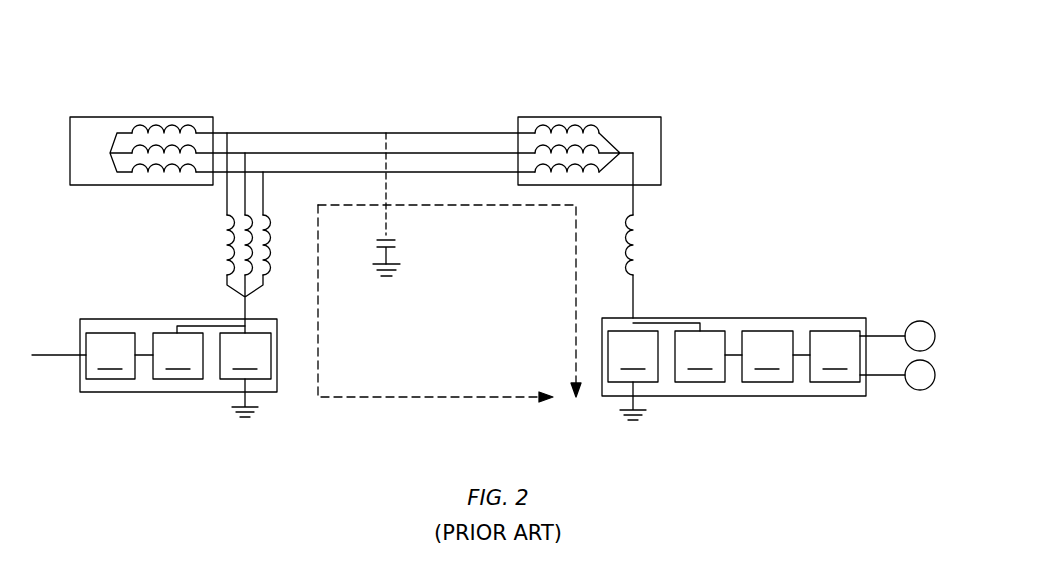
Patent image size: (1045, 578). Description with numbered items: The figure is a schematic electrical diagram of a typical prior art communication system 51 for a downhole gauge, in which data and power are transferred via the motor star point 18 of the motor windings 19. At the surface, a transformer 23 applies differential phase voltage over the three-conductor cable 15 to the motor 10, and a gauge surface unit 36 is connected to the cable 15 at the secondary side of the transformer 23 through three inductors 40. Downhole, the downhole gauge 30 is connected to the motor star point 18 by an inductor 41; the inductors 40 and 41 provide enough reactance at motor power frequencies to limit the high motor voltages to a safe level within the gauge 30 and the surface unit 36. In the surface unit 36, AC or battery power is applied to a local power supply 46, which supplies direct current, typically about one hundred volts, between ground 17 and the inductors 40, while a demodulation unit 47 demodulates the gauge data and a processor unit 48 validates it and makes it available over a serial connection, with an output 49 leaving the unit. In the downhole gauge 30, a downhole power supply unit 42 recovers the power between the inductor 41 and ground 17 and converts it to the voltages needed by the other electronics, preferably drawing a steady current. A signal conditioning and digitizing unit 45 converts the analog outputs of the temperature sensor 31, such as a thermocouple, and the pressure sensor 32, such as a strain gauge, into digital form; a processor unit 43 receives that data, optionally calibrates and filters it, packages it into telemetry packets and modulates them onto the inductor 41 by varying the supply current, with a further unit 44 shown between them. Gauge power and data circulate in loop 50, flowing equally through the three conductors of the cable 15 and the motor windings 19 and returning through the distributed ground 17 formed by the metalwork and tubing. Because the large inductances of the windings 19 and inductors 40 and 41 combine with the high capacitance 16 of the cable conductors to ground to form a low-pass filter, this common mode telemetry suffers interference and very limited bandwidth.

The communication system 51 is at (700, 93).
The transformer 23 is at (143, 117).
The cable 15 is at (353, 133).
The motor 10 is at (610, 112).
The motor windings 19 is at (586, 128).
The motor star point 18 is at (620, 143).
The inductors 40 is at (227, 255).
The capacitance 16 is at (388, 245).
The ground 17 is at (388, 272).
The loop 50 is at (415, 397).
The inductor 41 is at (641, 240).
The gauge surface unit 36 is at (154, 367).
The control output 49 is at (43, 355).
The processor unit 48 is at (110, 356).
The demodulation unit 47 is at (178, 356).
The local power supply 46 is at (245, 356).
The downhole gauge 30 is at (775, 355).
The downhole power supply unit 42 is at (633, 356).
The processor unit 43 is at (700, 356).
The logic module 44 is at (767, 356).
The signal conditioning and digitizing unit 45 is at (835, 356).
The pressure sensor 32 is at (918, 321).
The temperature sensor 31 is at (919, 390).